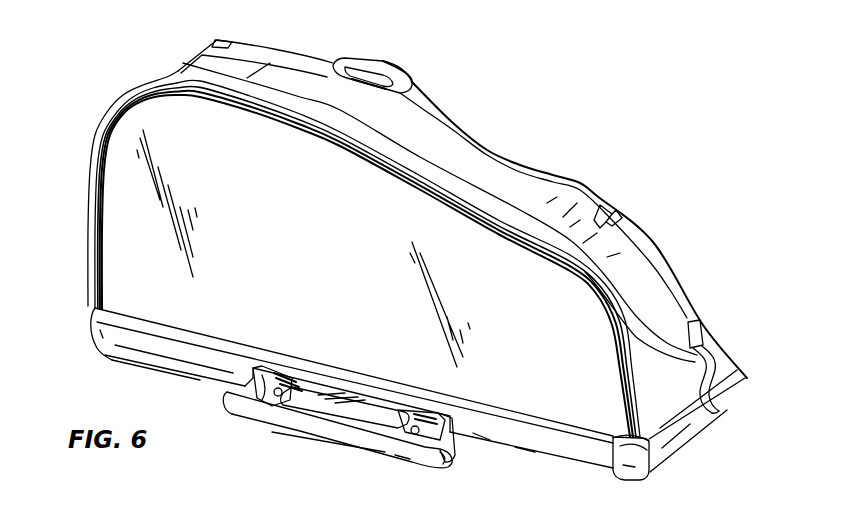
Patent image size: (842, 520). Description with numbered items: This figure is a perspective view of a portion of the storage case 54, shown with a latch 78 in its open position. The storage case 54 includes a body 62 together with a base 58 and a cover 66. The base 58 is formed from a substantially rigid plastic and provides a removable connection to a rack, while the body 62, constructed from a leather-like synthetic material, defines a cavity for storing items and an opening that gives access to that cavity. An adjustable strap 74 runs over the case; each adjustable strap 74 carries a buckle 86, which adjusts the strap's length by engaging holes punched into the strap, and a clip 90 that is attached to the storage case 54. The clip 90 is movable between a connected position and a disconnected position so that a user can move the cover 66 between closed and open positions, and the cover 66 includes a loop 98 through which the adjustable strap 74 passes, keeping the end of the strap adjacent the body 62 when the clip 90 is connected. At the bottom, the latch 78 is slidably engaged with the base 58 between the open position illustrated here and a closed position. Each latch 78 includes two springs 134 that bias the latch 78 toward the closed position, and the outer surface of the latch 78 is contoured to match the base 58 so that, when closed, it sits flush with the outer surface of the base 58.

The storage case 54 is at (589, 117).
The base 58 is at (110, 337).
The body 62 is at (127, 215).
The cover 66 is at (447, 147).
The adjustable strap 74 is at (247, 50).
The latch 78 is at (332, 425).
The buckle 86 is at (340, 62).
The clip 90 is at (720, 353).
The loop 98 is at (617, 207).
The spring 134 is at (261, 393).